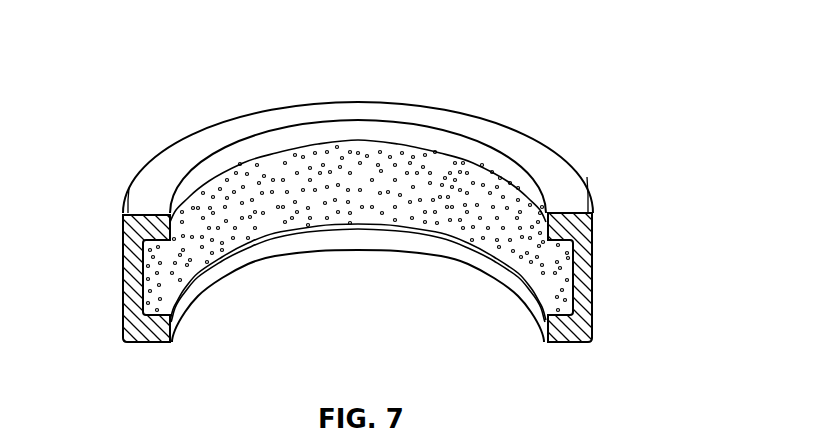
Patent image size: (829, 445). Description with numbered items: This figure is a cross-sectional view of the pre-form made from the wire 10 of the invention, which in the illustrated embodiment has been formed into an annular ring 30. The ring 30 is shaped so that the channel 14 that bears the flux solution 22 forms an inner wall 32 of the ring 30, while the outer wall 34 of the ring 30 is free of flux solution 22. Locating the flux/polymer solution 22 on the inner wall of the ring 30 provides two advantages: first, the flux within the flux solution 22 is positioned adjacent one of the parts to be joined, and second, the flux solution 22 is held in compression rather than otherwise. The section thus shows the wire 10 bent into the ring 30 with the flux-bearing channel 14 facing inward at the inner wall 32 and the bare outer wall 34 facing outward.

The wire 10 is at (118, 90).
The channel 14 is at (545, 304).
The flux solution 22 is at (481, 194).
The annular ring 30 is at (125, 196).
The inner wall 32 is at (452, 146).
The outer wall 34 is at (594, 272).